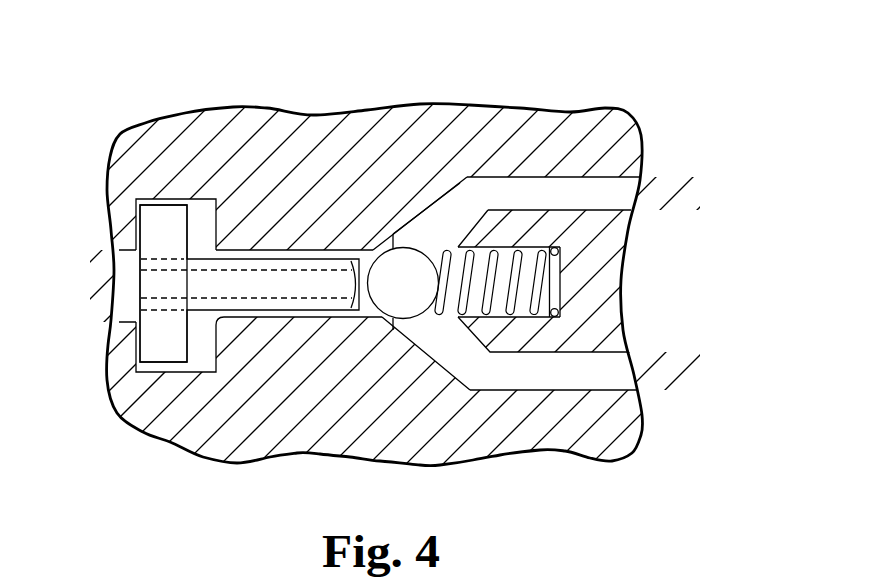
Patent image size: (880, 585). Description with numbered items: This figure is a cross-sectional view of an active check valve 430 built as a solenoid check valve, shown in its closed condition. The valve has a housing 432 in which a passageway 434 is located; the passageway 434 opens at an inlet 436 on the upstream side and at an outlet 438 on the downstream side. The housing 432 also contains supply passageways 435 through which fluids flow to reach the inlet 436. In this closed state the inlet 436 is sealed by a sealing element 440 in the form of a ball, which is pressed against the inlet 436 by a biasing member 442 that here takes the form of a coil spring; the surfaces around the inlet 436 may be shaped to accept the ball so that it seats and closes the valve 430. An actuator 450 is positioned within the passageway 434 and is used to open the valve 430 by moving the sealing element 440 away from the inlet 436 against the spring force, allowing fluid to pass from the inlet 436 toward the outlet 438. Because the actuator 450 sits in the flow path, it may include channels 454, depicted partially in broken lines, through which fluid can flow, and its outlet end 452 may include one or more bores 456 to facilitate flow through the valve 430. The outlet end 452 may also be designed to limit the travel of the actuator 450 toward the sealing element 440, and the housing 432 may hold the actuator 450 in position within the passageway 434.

The active check valve 430 is at (404, 97).
The housing 432 is at (283, 410).
The passageway 434 is at (290, 249).
The supply passageways 435 is at (625, 191).
The inlet 436 is at (371, 257).
The outlet 438 is at (207, 320).
The sealing element 440 is at (423, 294).
The biasing member 442 is at (560, 277).
The actuator 450 is at (200, 256).
The outlet end 452 is at (160, 229).
The channels 454 is at (315, 267).
The bores 456 is at (147, 307).